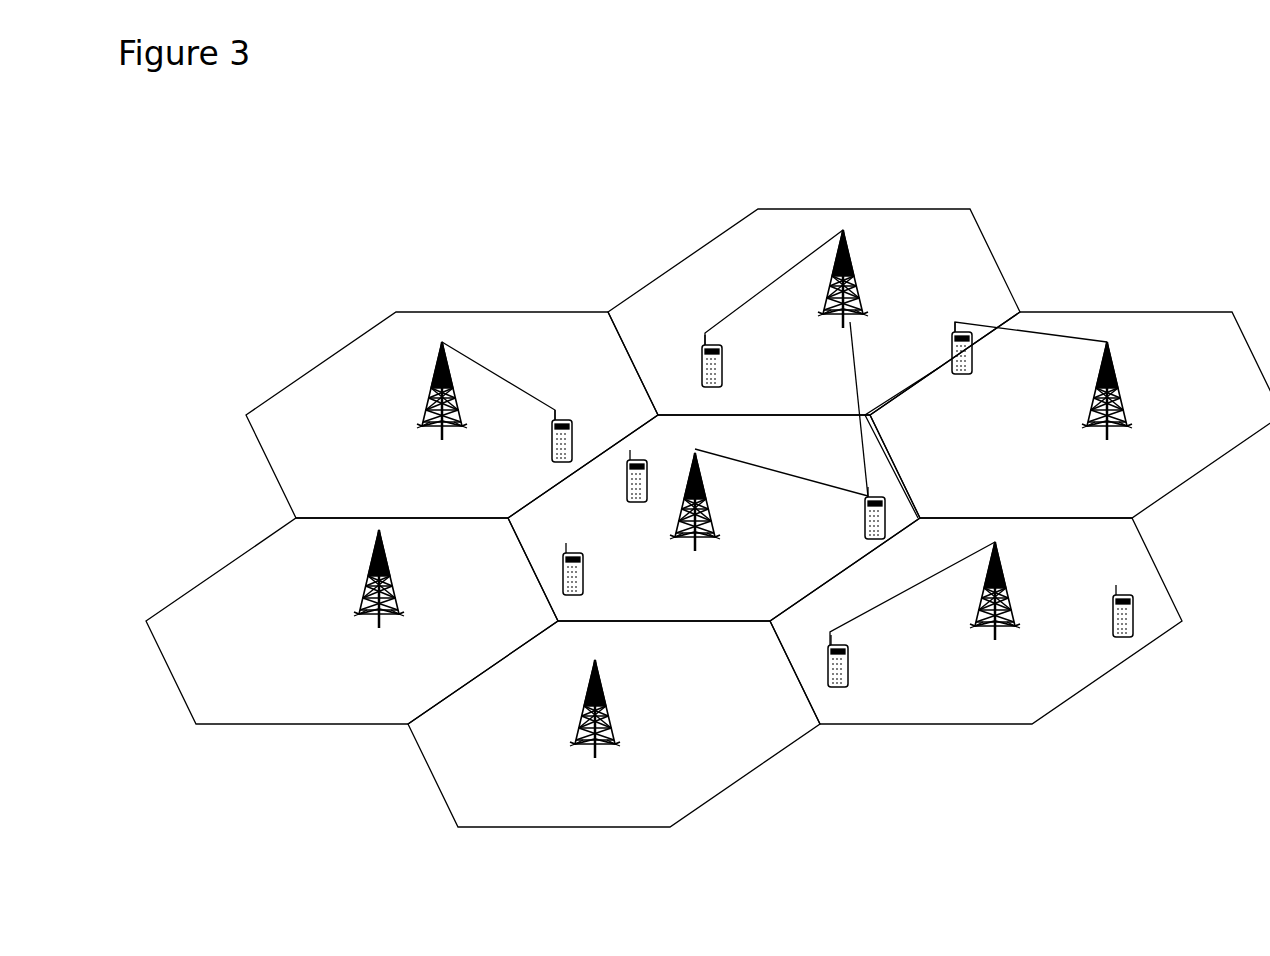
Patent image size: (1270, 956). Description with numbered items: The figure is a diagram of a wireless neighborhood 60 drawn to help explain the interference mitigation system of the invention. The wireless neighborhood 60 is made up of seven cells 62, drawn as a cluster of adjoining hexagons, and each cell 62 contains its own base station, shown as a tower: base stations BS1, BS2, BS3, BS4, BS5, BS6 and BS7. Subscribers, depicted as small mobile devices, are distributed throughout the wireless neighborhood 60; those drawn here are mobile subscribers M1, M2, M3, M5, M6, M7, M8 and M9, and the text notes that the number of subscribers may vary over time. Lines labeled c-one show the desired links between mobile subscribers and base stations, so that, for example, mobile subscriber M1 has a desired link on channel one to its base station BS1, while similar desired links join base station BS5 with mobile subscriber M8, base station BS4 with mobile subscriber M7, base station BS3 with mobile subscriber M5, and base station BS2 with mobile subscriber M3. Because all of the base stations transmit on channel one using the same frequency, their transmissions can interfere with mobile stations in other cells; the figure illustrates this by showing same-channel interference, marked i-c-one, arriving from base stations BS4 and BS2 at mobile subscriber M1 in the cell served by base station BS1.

The wireless neighborhood 60 is at (669, 137).
The cells 62 is at (310, 368).
The base station BS1 is at (695, 521).
The base station BS2 is at (995, 613).
The base station BS3 is at (1107, 410).
The base station BS4 is at (843, 294).
The base station BS5 is at (442, 414).
The base station BS6 is at (379, 602).
The base station BS7 is at (595, 726).
The mobile subscriber M1 is at (859, 519).
The mobile subscriber M2 is at (586, 581).
The mobile subscriber M3 is at (834, 679).
The mobile subscriber M5 is at (959, 369).
The mobile subscriber M6 is at (1108, 618).
The mobile subscriber M7 is at (724, 367).
The mobile subscriber M8 is at (550, 447).
The mobile subscriber M9 is at (627, 489).